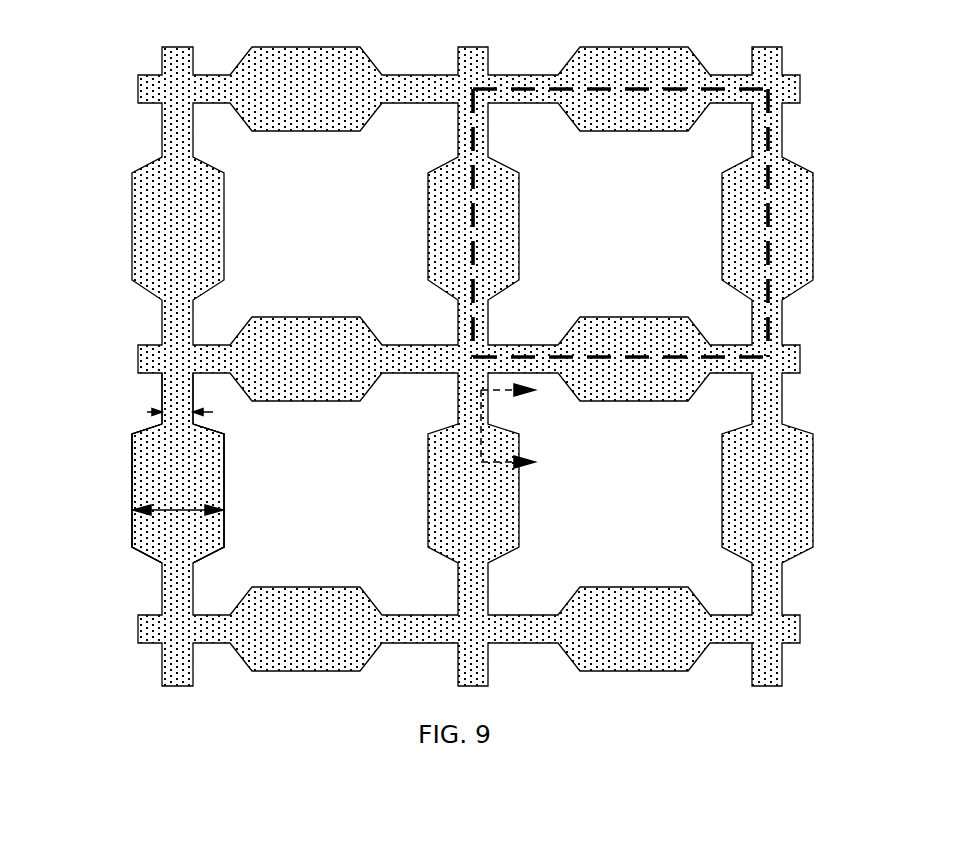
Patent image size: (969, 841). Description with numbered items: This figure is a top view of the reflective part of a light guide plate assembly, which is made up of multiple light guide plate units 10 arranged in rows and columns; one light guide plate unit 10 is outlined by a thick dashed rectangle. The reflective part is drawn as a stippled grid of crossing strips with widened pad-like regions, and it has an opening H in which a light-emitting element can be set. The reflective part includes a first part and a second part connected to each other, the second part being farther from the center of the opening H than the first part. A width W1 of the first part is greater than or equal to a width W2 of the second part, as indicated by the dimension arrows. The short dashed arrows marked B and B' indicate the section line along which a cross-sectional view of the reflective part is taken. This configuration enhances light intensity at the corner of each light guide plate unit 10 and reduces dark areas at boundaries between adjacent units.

The light guide plate unit 10 is at (779, 147).
The opening H is at (290, 477).
The width of first part W1 is at (178, 525).
The width of second part W2 is at (192, 401).
The section line endpoint B is at (520, 471).
The section line endpoint B' is at (519, 423).